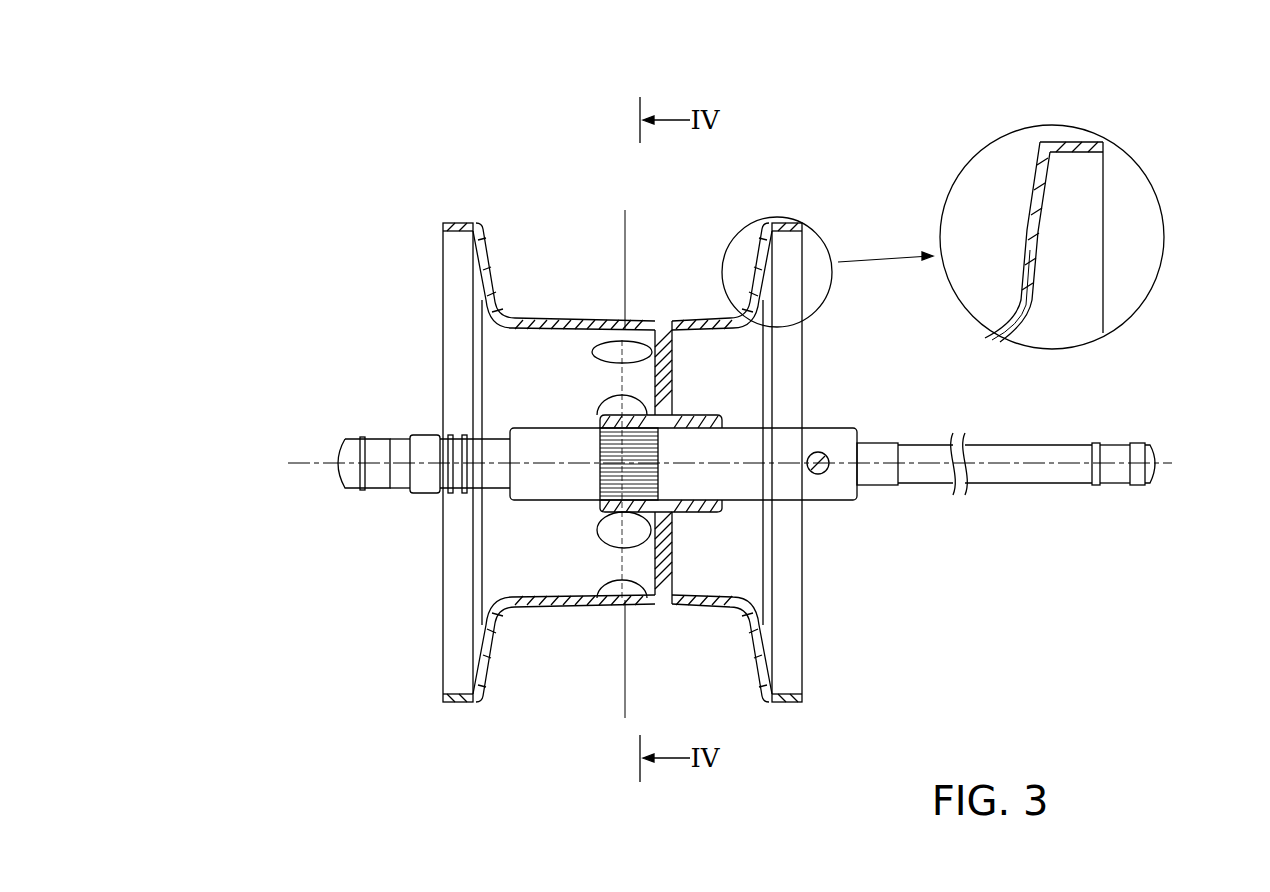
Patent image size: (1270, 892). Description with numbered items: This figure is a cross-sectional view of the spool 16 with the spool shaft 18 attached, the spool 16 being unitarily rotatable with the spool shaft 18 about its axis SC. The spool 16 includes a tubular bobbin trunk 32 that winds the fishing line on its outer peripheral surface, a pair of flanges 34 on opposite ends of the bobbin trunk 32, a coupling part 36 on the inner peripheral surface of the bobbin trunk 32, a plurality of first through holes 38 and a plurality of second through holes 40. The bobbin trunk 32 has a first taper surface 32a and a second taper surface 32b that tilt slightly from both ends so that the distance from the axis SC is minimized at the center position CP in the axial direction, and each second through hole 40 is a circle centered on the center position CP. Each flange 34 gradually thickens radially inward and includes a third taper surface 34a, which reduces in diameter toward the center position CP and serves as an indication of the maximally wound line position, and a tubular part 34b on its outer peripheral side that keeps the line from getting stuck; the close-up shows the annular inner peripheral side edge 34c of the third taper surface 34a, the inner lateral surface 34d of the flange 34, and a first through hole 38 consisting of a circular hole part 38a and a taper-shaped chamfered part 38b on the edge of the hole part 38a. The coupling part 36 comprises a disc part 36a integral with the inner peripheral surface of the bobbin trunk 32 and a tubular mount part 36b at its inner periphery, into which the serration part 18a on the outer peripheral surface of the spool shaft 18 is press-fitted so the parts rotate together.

The spool 16 is at (805, 422).
The spool shaft 18 is at (836, 412).
The serration part 18a is at (597, 514).
The bobbin trunk 32 is at (622, 460).
The first taper surface 32a is at (540, 608).
The second taper surface 32b is at (708, 608).
The flange 34 is at (805, 412).
The third taper surface 34a is at (487, 219).
The tubular part 34b is at (458, 222).
The annular inner peripheral side edge 34c is at (1040, 150).
The inner lateral surface 34d is at (1030, 228).
The coupling part 36 is at (680, 462).
The disc part 36a is at (663, 378).
The tubular mount part 36b is at (680, 422).
The first through hole 38 is at (487, 276).
The hole part 38a is at (1028, 305).
The chamfered part 38b is at (1030, 242).
The second through hole 40 is at (612, 360).
The center position CP is at (625, 235).
The axis SC is at (315, 462).